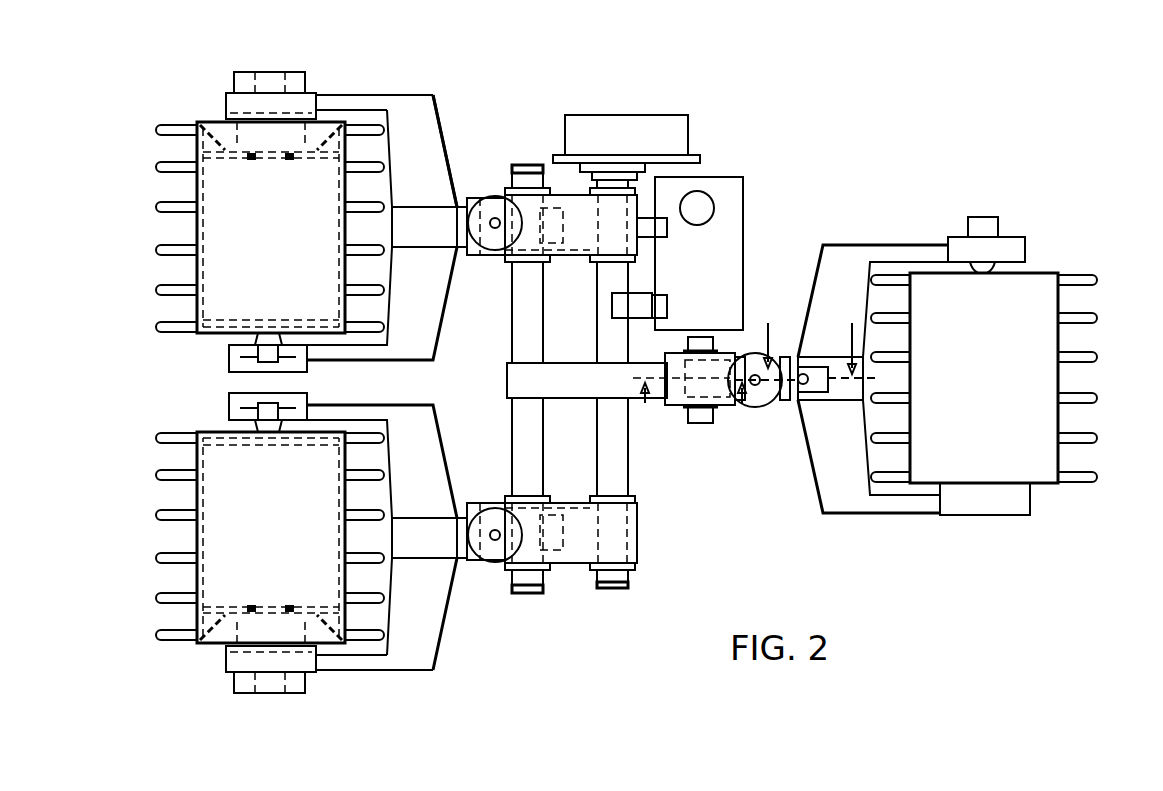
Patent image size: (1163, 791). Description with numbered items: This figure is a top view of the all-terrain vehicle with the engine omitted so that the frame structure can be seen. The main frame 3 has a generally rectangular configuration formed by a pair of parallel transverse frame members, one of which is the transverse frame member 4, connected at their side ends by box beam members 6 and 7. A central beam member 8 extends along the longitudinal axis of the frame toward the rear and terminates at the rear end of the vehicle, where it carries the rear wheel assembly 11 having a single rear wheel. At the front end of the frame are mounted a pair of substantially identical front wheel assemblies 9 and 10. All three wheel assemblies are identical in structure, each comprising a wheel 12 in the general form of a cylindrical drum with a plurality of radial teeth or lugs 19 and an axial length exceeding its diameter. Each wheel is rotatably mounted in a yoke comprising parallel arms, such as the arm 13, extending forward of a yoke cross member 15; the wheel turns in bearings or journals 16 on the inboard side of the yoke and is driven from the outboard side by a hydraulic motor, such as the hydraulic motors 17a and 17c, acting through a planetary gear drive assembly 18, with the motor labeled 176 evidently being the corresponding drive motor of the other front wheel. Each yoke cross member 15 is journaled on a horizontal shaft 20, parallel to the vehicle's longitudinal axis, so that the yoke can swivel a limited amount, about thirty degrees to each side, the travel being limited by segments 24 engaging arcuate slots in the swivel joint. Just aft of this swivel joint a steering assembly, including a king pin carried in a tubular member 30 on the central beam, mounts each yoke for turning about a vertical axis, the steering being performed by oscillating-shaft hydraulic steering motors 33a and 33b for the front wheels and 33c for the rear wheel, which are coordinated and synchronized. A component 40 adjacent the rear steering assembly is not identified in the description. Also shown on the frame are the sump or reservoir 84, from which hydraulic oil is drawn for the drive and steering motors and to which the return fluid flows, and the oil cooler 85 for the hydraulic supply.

The main frame 3 is at (650, 474).
The transverse frame member 4 is at (522, 325).
The box beam member 6 is at (580, 557).
The box beam member 7 is at (557, 197).
The central beam member 8 is at (577, 390).
The front wheel assembly 9 is at (72, 199).
The front wheel assembly 10 is at (52, 557).
The rear wheel assembly 11 is at (785, 522).
The wheel 12 is at (212, 229).
The yoke arm 13 is at (352, 96).
The yoke cross member 15 is at (435, 287).
The bearings or journals 16 is at (235, 357).
The hydraulic motor 17a is at (260, 73).
The hydraulic motor 17c is at (985, 216).
The carburetor 176 is at (303, 678).
The planetary gear drive assembly 18 is at (248, 132).
The radial teeth or lugs 19 is at (160, 327).
The shaft 20 is at (462, 522).
The segments 24 is at (424, 115).
The tubular member 30 is at (317, 645).
The steering motor 33a is at (483, 200).
The steering motor 33b is at (500, 507).
The steering motor 33c is at (768, 407).
The bearing block 40 is at (698, 420).
The sump or reservoir 84 is at (740, 205).
The oil cooler 85 is at (622, 123).